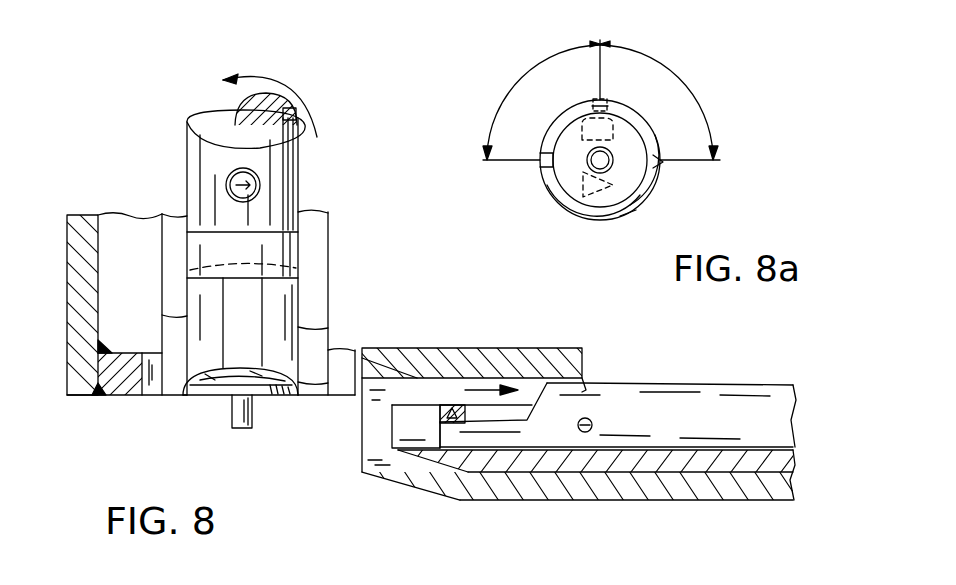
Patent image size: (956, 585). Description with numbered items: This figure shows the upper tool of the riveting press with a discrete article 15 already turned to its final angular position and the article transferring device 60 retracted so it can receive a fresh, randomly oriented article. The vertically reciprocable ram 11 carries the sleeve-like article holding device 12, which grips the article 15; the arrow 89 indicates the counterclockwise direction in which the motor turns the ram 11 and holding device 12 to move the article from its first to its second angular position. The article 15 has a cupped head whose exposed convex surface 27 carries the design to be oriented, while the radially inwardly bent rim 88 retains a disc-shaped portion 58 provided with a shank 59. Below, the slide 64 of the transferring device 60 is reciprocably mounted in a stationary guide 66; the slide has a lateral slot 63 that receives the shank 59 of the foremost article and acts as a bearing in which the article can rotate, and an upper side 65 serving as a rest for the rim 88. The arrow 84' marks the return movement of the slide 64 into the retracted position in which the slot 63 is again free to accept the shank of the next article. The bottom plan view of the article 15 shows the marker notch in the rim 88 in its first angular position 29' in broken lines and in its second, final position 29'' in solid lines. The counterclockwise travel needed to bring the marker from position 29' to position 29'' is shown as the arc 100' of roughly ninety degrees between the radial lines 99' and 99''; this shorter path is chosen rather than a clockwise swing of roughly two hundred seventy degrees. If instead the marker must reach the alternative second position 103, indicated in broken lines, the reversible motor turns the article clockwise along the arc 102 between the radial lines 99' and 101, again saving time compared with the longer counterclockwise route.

In FIG. 8, the ram 11 is at (276, 168).
In FIG. 8, the article holding device 12 is at (315, 270).
In FIG. 8, the discrete article 15 is at (218, 392).
In FIG. 8a, the discrete article 15 is at (560, 112).
In FIG. 8, the convex surface 27 is at (268, 368).
In FIG. 8a, the first angular position of marker 29' is at (625, 88).
In FIG. 8a, the second angular position of marker 29'' is at (554, 157).
In FIG. 8a, the disc-shaped portion 58 is at (620, 132).
In FIG. 8, the shank 59 is at (240, 418).
In FIG. 8a, the shank 59 is at (617, 155).
In FIG. 8, the article transferring device 60 is at (593, 502).
In FIG. 8, the lateral slot 63 is at (440, 412).
In FIG. 8, the slide 64 is at (392, 418).
In FIG. 8, the upper side 65 is at (418, 402).
In FIG. 8, the guide 66 is at (677, 485).
In FIG. 8, the arrow of return movement 84' is at (618, 372).
In FIG. 8a, the rim 88 is at (637, 212).
In FIG. 8, the arrow of rotation direction 89 is at (310, 112).
In FIG. 8a, the radial line 99' is at (578, 70).
In FIG. 8a, the radial line 99'' is at (511, 181).
In FIG. 8a, the arc 100' is at (523, 101).
In FIG. 8a, the radial line 101 is at (703, 162).
In FIG. 8a, the arc 102 is at (677, 73).
In FIG. 8a, the alternative second angular position of marker 103 is at (657, 163).